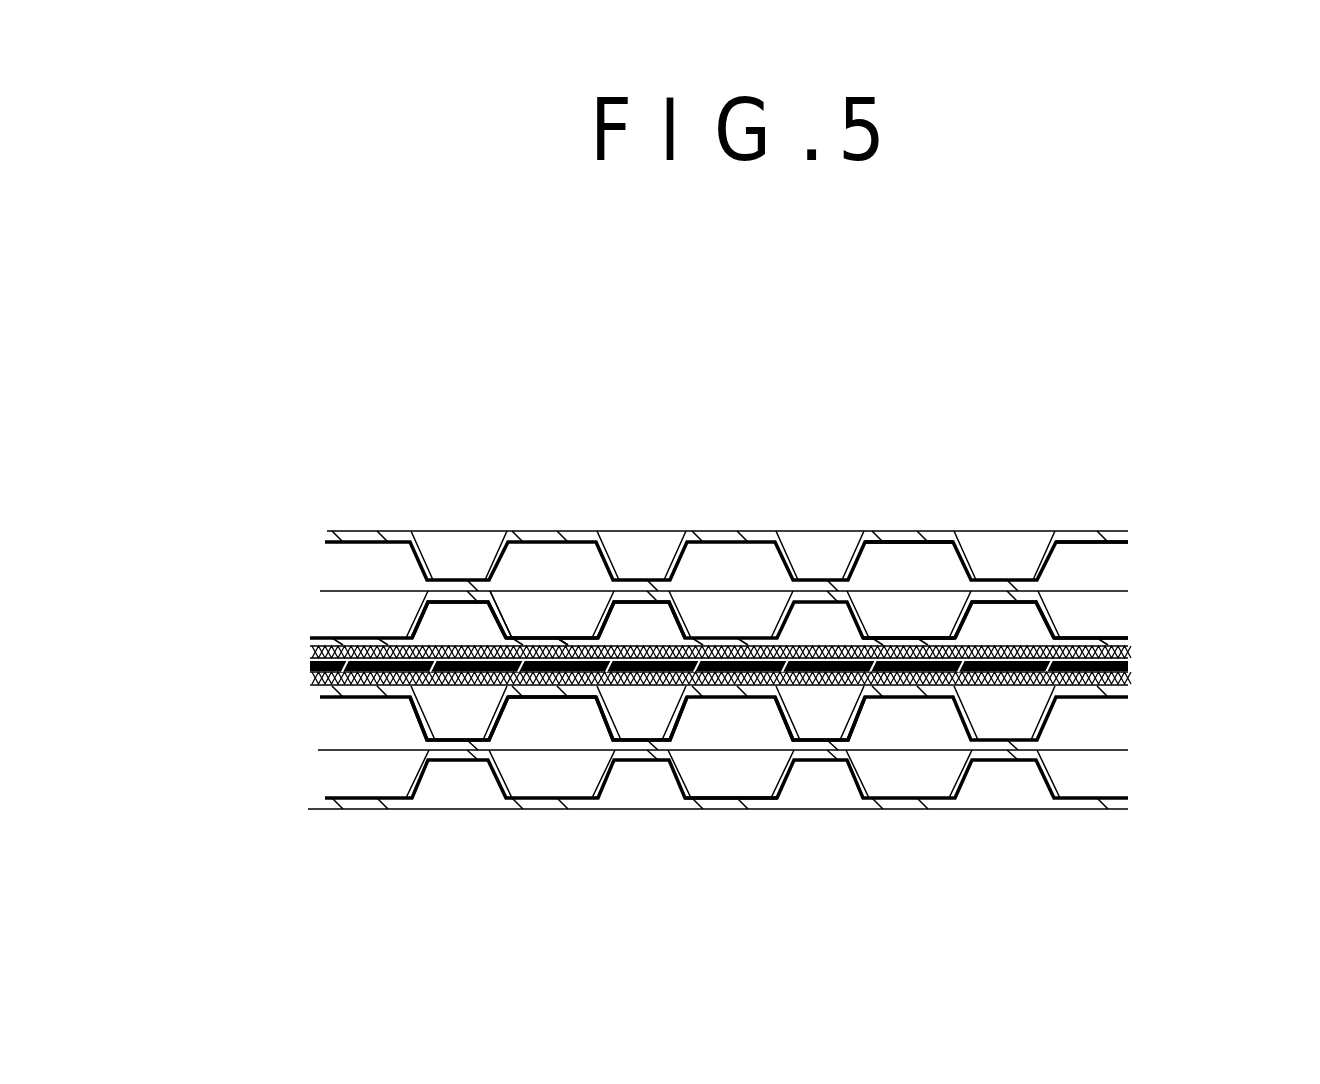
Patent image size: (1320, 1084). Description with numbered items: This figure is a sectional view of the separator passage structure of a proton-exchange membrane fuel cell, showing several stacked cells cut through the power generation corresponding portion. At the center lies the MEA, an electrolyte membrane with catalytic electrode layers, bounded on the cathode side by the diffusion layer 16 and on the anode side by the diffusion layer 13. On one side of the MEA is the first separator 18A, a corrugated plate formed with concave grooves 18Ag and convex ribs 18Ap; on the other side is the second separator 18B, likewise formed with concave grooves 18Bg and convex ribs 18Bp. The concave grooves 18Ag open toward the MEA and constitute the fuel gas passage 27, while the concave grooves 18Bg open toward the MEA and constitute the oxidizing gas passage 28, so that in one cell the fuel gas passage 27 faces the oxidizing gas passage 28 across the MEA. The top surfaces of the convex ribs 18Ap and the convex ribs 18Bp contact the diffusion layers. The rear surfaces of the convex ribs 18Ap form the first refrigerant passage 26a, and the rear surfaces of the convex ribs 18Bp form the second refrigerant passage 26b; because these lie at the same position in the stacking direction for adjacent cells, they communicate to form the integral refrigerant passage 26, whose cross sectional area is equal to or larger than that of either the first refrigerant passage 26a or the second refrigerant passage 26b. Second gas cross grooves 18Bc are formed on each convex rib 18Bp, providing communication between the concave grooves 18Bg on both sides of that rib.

The first separator 18A is at (1108, 578).
The second separator 18B is at (1100, 620).
The membrane-electrode assembly MEA is at (308, 667).
The diffusion layer 16 is at (337, 642).
The diffusion layer 13 is at (313, 694).
The concave grooves 18Bg is at (467, 625).
The convex ribs 18Bp is at (557, 630).
The second gas cross grooves 18Bc is at (568, 613).
The oxidizing gas passage 28 is at (638, 625).
The refrigerant passage 26 is at (985, 462).
The second refrigerant passage 26b is at (890, 628).
The first refrigerant passage 26a is at (928, 578).
The fuel gas passage 27 is at (635, 712).
The concave grooves 18Ag is at (477, 735).
The convex ribs 18Ap is at (567, 697).